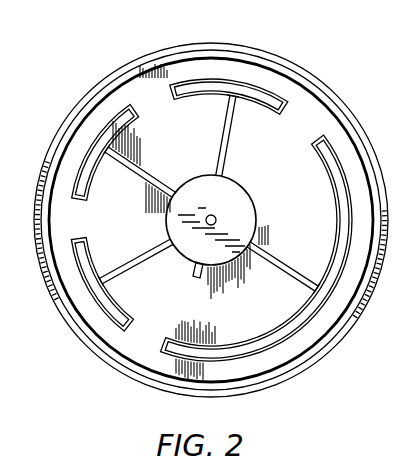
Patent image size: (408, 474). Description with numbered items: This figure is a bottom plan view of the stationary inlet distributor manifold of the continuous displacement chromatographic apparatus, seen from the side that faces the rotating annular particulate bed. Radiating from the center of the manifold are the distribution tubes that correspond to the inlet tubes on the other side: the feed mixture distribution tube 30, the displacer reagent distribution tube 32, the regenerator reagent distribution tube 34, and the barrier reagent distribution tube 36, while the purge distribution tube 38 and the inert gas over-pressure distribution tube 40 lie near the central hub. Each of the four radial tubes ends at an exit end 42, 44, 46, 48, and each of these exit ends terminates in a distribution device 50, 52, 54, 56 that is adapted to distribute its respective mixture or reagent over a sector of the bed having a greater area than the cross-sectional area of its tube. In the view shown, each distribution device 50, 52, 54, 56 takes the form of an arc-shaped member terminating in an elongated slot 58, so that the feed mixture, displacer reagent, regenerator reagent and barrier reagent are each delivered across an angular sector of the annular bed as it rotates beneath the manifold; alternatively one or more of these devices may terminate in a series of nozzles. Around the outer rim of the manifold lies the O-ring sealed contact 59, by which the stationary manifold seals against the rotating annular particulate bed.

The feed mixture distribution tube 30 is at (140, 262).
The displacer reagent distribution tube 32 is at (272, 270).
The regenerator reagent distribution tube 34 is at (226, 153).
The barrier reagent distribution tube 36 is at (166, 184).
The purge distribution tube 38 is at (216, 221).
The inert gas over-pressure distribution tube 40 is at (194, 268).
The exit end 42 is at (118, 286).
The exit end 44 is at (316, 286).
The exit end 46 is at (238, 107).
The exit end 48 is at (110, 156).
The distribution device 50 is at (82, 285).
The distribution device 52 is at (318, 322).
The distribution device 54 is at (268, 90).
The distribution device 56 is at (107, 124).
The elongated slot 58 is at (233, 82).
The O-ring sealed contact 59 is at (279, 377).